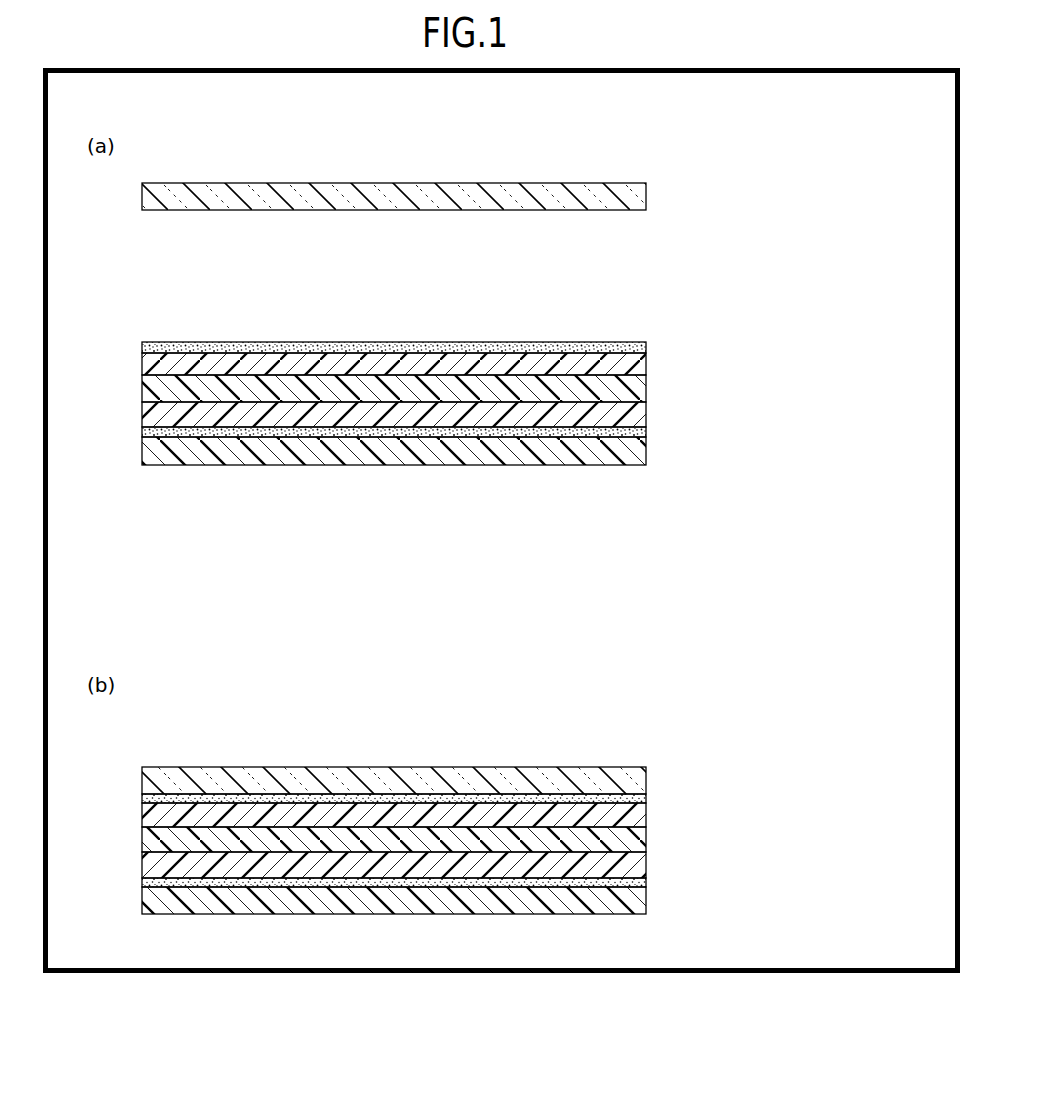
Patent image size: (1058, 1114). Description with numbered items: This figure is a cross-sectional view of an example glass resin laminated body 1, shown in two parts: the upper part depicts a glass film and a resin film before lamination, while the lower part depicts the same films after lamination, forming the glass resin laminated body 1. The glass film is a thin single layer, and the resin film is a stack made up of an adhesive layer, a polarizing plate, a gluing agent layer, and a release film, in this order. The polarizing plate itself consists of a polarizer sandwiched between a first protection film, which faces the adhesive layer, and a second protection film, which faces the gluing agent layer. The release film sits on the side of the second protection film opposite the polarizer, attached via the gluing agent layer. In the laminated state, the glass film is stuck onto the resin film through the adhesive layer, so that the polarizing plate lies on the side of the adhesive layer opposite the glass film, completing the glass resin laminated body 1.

The glass resin laminated body 1 is at (496, 835).